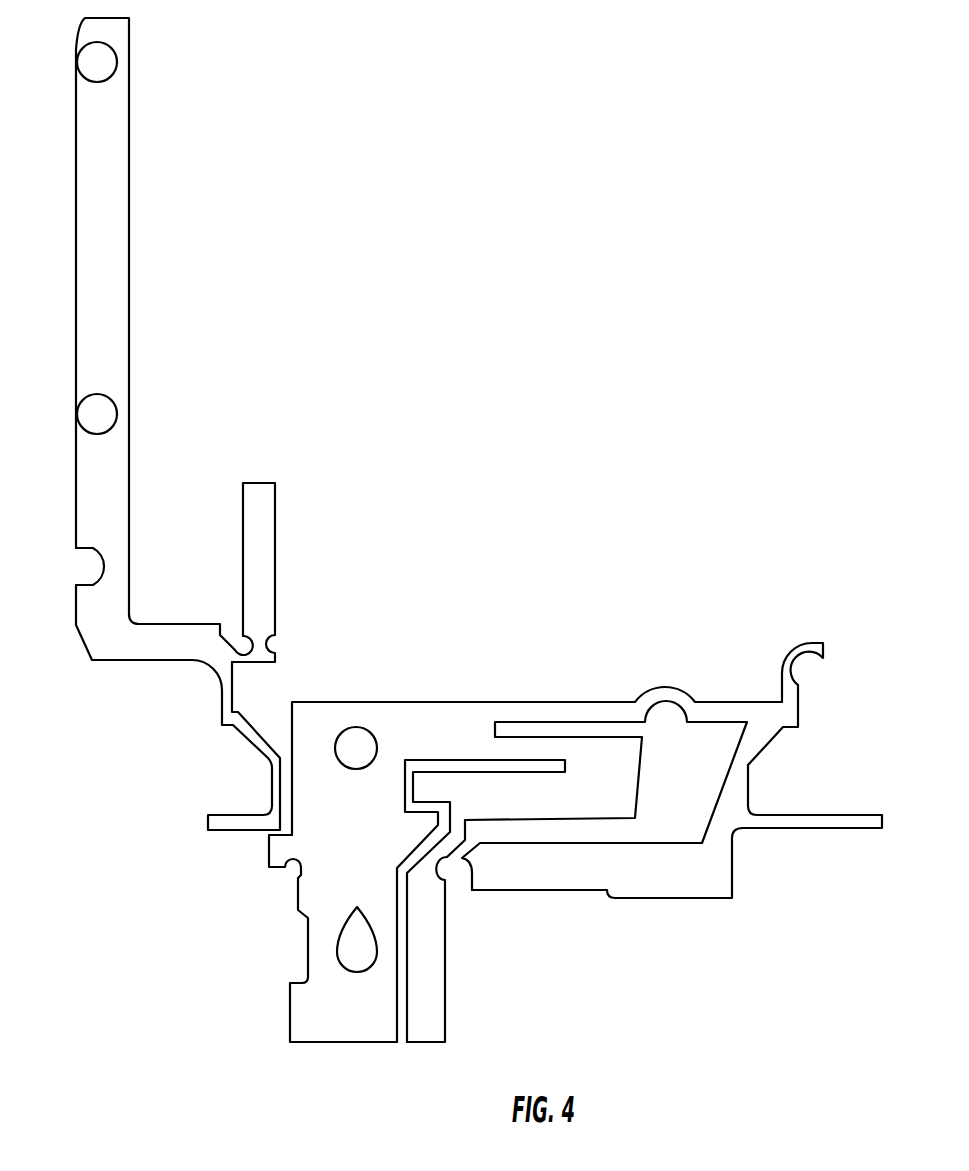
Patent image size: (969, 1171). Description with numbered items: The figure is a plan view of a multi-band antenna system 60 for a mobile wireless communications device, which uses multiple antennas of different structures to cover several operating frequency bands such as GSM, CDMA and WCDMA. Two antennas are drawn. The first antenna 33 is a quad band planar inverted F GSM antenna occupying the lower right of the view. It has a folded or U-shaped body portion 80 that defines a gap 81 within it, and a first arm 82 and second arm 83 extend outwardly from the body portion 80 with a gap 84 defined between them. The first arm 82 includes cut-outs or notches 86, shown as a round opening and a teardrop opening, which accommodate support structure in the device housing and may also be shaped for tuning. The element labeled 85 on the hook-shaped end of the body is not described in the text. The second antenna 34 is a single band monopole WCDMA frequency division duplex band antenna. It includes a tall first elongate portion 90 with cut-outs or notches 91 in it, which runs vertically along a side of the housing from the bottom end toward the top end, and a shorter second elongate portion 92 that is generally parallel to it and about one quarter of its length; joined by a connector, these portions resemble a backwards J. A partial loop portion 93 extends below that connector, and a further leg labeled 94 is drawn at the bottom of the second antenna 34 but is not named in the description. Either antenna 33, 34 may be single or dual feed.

The first antenna 33 is at (607, 607).
The second antenna 34 is at (187, 258).
The multi-band antenna system 60 is at (535, 270).
The body portion 80 is at (710, 900).
The gap 81 is at (628, 833).
The first arm 82 is at (340, 1042).
The second arm 83 is at (430, 1042).
The gap 84 is at (403, 1035).
The hook 85 is at (800, 683).
The cut-outs or notches 86 is at (357, 907).
The first elongate portion 90 is at (76, 245).
The cut-outs or notches 91 is at (88, 63).
The second elongate portion 92 is at (275, 495).
The partial loop portion 93 is at (173, 625).
The leg 94 is at (220, 722).